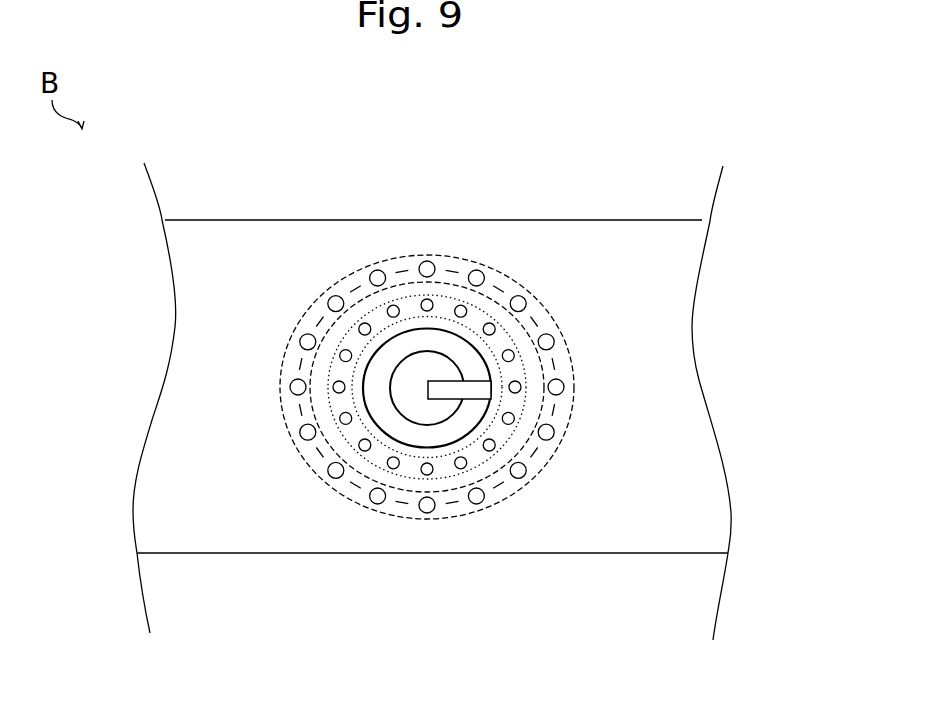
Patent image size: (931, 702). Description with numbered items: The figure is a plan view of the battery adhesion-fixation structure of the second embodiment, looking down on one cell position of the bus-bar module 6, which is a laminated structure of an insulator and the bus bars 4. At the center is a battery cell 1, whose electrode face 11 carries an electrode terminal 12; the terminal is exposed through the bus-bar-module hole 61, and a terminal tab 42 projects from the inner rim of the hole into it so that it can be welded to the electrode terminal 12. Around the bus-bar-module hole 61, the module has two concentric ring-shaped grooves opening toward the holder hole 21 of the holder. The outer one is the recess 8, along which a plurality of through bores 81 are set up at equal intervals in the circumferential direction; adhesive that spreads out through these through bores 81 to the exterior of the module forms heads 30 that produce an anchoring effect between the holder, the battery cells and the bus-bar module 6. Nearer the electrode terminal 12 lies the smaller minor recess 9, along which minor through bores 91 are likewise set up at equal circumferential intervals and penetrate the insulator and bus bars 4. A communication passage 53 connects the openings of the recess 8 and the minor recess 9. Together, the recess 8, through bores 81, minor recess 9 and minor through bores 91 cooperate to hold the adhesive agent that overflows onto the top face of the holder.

The battery cell 1 is at (575, 419).
The electrode face 11 is at (416, 437).
The electrode terminal 12 is at (436, 415).
The bus bar 4 is at (432, 400).
The bus-bar module 6 is at (258, 232).
The recess 8 is at (542, 403).
The through bore 81 is at (563, 374).
The minor recess 9 is at (344, 405).
The minor through bore 91 is at (340, 425).
The holder hole 21 is at (493, 290).
The head 30 is at (363, 323).
The terminal tab 42 is at (468, 388).
The communication passage 53 is at (409, 298).
The bus-bar-module hole 61 is at (387, 437).